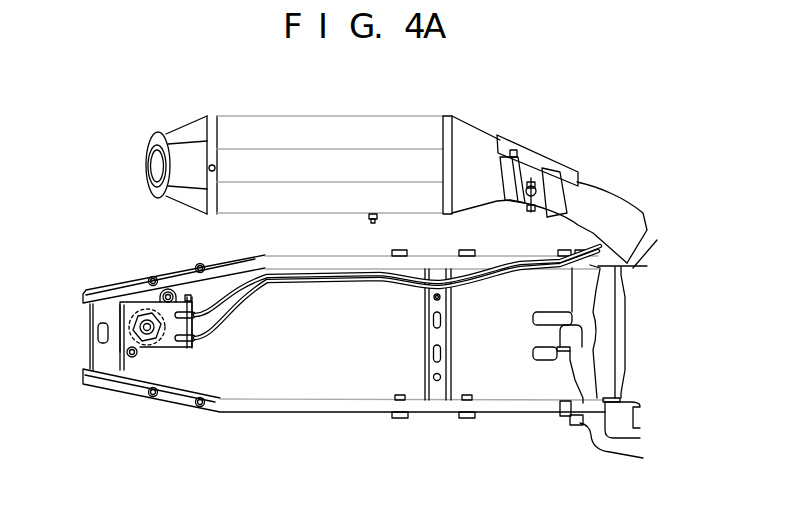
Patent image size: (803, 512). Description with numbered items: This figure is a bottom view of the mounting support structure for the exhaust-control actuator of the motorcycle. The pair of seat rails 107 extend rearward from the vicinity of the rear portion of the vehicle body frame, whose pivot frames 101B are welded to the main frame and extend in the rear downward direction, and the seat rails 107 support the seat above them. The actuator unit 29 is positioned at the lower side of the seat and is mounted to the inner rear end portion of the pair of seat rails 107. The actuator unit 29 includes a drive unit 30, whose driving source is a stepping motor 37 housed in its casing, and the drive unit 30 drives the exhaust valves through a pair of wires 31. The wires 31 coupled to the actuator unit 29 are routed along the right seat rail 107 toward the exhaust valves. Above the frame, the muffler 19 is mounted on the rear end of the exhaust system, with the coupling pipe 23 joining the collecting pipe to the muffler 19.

The muffler 19 is at (362, 128).
The coupling pipe 23 is at (614, 204).
The actuator unit 29 is at (171, 364).
The drive unit 30 is at (136, 316).
The wires 31 is at (205, 306).
The stepping motor 37 is at (130, 333).
The seat rail 107 is at (168, 268).
The pivot frame 101B is at (583, 382).